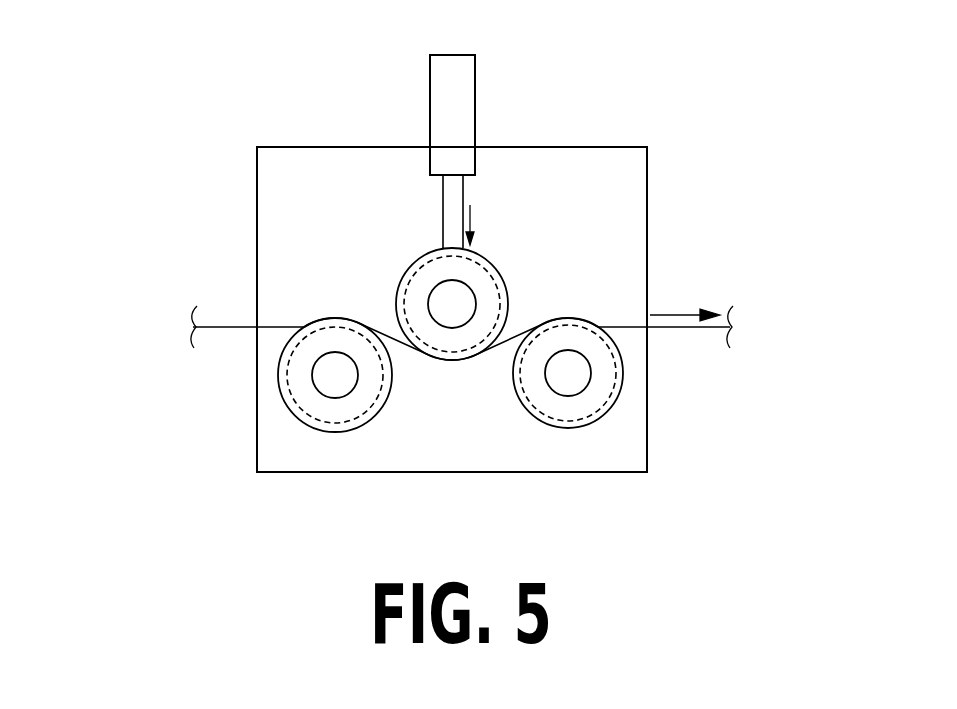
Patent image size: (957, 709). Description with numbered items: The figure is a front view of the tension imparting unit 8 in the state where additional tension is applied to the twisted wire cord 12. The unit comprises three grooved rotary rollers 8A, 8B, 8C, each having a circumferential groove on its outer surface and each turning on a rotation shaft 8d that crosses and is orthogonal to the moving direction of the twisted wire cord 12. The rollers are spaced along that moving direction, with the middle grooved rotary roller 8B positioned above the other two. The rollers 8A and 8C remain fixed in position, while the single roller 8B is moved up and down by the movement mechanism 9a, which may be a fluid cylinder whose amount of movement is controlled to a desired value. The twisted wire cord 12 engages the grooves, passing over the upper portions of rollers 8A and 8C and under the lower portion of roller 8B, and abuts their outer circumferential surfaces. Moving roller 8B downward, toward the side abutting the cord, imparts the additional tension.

The tension imparting unit 8 is at (345, 137).
The movement mechanism 9a is at (468, 130).
The twisted wire cord 12 is at (277, 326).
The grooved rotary roller 8A is at (333, 408).
The grooved rotary roller 8B is at (413, 277).
The grooved rotary roller 8C is at (570, 405).
The rotation shaft 8d is at (468, 303).